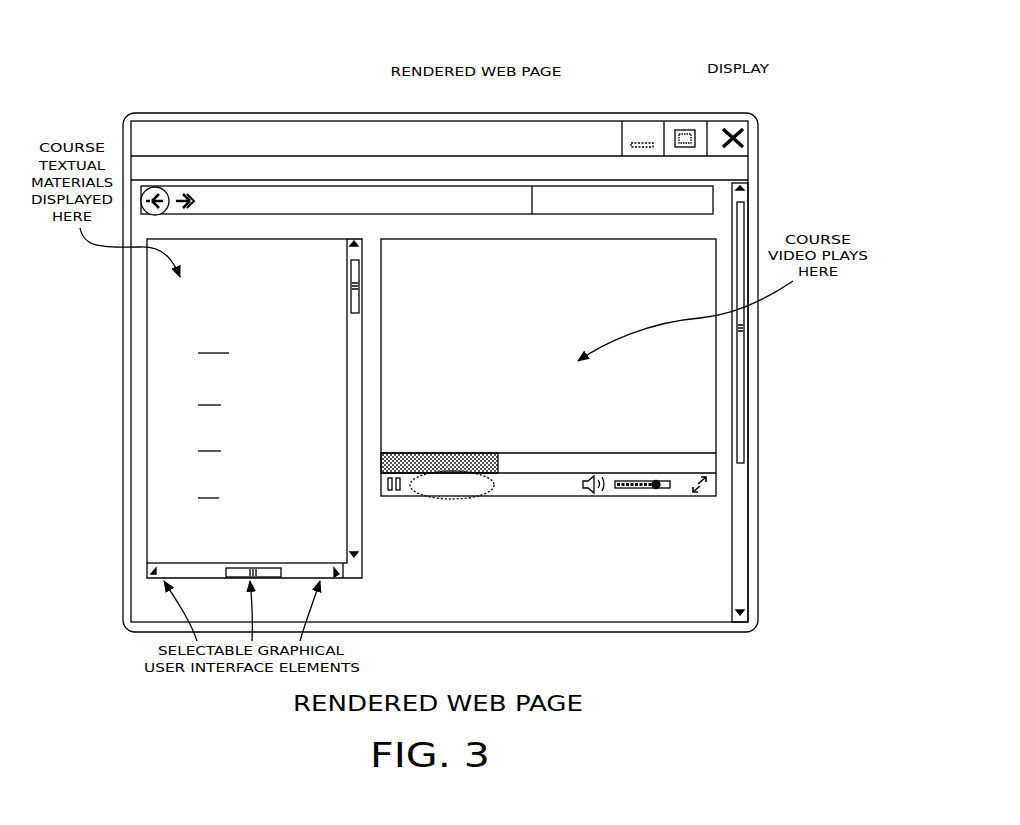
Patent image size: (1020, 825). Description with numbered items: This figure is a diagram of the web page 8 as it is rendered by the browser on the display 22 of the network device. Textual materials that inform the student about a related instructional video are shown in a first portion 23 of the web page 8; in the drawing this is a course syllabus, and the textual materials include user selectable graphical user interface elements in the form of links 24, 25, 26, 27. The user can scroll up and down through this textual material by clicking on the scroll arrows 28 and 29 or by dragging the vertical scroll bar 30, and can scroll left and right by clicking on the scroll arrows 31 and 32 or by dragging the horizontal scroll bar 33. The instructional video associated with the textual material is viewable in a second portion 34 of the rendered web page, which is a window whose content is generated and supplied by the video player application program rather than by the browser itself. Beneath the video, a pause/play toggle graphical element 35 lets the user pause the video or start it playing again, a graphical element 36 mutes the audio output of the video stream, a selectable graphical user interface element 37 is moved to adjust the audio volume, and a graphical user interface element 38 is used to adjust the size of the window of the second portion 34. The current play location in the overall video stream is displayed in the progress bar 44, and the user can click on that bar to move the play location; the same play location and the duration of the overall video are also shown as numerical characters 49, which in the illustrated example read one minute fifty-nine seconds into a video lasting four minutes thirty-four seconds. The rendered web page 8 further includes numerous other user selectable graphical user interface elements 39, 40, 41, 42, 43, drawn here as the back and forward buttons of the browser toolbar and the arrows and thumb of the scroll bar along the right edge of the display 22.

The web page 8 is at (474, 120).
The display 22 is at (733, 114).
The first portion 23 is at (301, 407).
The link 24 is at (195, 344).
The link 25 is at (195, 396).
The link 26 is at (195, 442).
The link 27 is at (195, 489).
The scroll arrow 28 is at (362, 243).
The scroll arrow 29 is at (359, 559).
The vertical scroll bar 30 is at (361, 288).
The scroll arrow 31 is at (155, 576).
The scroll arrow 32 is at (334, 578).
The horizontal scroll bar 33 is at (262, 578).
The second portion 34 is at (551, 364).
The pause/play toggle graphical element 35 is at (394, 497).
The graphical element 36 is at (591, 495).
The selectable graphical user interface element 37 is at (657, 490).
The graphical user interface element 38 is at (703, 496).
The user selectable graphical user interface element 39 is at (162, 211).
The user selectable graphical user interface element 40 is at (194, 210).
The user selectable graphical user interface element 41 is at (744, 188).
The user selectable graphical user interface element 42 is at (745, 347).
The user selectable graphical user interface element 43 is at (742, 612).
The progress bar 44 is at (476, 453).
The numerical characters 49 is at (451, 501).